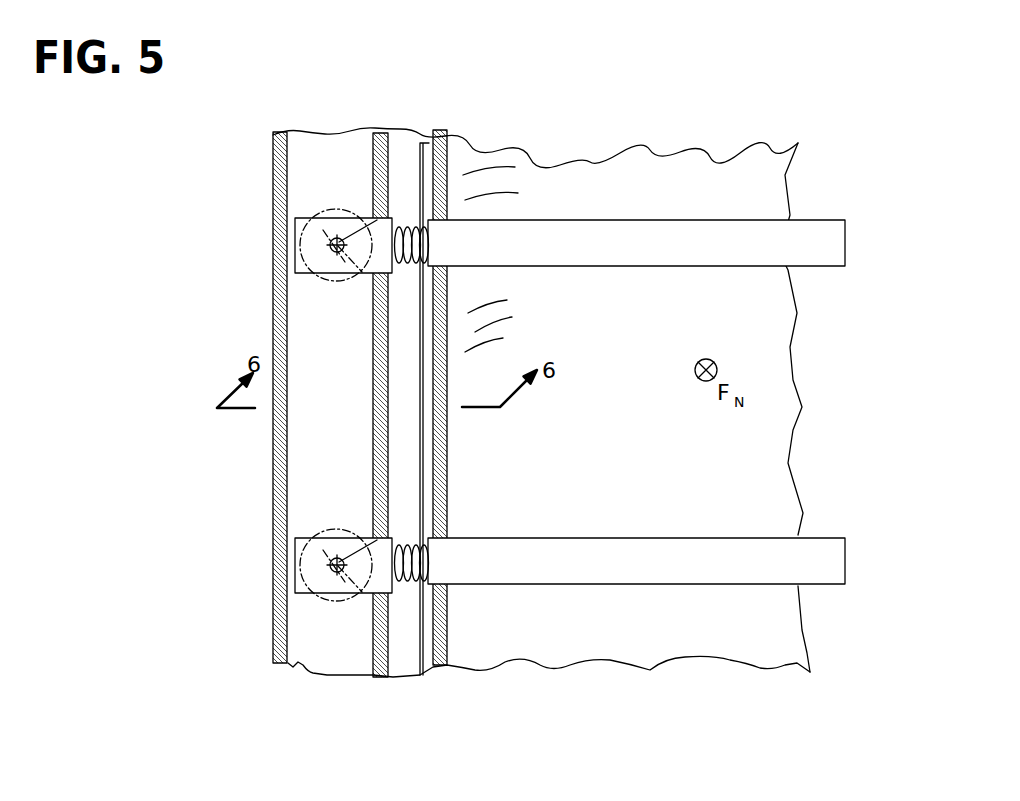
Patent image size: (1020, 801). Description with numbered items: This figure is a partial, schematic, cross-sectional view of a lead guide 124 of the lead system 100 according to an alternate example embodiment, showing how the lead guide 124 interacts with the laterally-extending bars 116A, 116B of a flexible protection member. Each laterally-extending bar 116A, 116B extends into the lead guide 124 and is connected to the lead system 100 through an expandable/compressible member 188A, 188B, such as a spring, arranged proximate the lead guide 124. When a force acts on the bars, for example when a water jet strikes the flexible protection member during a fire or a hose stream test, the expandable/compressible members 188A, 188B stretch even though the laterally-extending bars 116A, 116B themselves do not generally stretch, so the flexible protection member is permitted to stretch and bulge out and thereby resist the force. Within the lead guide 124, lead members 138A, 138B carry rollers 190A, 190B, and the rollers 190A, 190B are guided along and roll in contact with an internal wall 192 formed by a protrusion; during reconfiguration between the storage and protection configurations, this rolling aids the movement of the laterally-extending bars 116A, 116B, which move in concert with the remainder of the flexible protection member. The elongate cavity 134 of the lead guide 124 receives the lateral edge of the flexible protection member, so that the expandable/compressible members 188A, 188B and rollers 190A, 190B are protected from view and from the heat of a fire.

The lead system 100 is at (275, 383).
The lead guide 124 is at (273, 418).
The elongate cavity 134 is at (402, 168).
The internal wall 192 is at (373, 455).
The lead member 138B is at (260, 305).
The lead member 138A is at (252, 616).
The roller 190B is at (315, 275).
The roller 190A is at (322, 600).
The expandable/compressible member 188B is at (448, 213).
The expandable/compressible member 188A is at (450, 531).
The laterally-extending bar 116B is at (636, 243).
The laterally-extending bar 116A is at (636, 561).